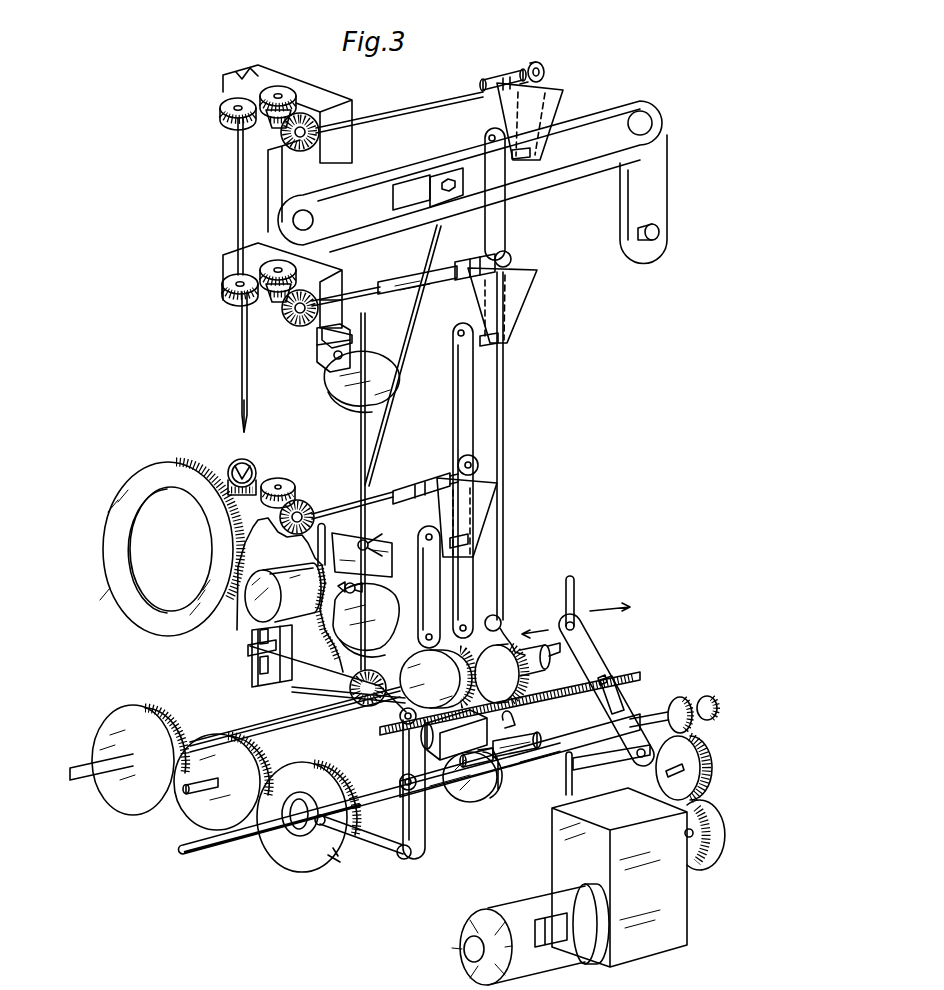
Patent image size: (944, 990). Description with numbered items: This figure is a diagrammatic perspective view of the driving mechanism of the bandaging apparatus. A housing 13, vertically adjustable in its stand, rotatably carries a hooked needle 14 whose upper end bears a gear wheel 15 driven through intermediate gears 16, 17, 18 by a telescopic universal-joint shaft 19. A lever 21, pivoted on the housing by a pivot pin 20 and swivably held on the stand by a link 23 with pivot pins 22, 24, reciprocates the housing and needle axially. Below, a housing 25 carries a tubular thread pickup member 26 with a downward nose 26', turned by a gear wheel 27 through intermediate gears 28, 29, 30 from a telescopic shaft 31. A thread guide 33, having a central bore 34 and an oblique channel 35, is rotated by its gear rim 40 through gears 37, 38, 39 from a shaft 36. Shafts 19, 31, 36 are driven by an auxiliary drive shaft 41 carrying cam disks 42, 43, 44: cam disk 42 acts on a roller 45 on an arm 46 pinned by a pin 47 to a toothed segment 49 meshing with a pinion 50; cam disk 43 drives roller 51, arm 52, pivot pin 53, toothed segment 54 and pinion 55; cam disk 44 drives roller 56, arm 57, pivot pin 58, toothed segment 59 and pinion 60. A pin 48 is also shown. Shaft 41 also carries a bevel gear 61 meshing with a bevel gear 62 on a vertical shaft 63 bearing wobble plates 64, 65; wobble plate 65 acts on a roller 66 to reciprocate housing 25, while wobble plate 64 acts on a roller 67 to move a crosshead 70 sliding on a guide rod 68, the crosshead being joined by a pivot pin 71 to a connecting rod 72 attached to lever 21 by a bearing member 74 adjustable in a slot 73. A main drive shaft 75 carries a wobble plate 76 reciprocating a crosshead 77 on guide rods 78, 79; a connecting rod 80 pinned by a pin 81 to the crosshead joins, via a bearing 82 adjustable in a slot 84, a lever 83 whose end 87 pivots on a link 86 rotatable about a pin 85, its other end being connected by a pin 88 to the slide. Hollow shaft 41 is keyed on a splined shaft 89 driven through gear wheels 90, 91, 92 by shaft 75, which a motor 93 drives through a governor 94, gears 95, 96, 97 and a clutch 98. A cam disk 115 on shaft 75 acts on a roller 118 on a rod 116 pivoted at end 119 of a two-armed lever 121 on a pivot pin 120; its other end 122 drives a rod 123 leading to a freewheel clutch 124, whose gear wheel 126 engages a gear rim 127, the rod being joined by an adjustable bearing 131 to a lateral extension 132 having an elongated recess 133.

The housing 13 is at (247, 74).
The hooked needle 14 is at (236, 153).
The gear wheel 15 is at (224, 104).
The intermediate gear 16 is at (285, 92).
The intermediate gear 17 is at (270, 130).
The intermediate gear 18 is at (314, 118).
The universal-joint shaft 19 is at (426, 100).
The pivot pin 20 is at (316, 222).
The lever 21 is at (352, 188).
The pivot pin 22 is at (660, 236).
The link 23 is at (660, 191).
The pivot pin 24 is at (653, 121).
The housing 25 is at (338, 293).
The tubular thread pickup member 26 is at (221, 362).
The nose 26' is at (215, 410).
The gear wheel 27 is at (222, 290).
The intermediate gear 28 is at (286, 271).
The intermediate gear 29 is at (280, 306).
The intermediate gear 30 is at (292, 328).
The universal-joint shaft 31 is at (398, 273).
The thread guide 33 is at (229, 478).
The central bore 34 is at (246, 464).
The channel 35 is at (240, 462).
The universal-joint shaft 36 is at (397, 477).
The intermediate gear 37 is at (308, 505).
The intermediate gear 38 is at (283, 513).
The intermediate gear 39 is at (278, 478).
The gear rim 40 is at (223, 502).
The auxiliary drive shaft 41 is at (522, 662).
The cam disk 42 is at (410, 666).
The cam disk 43 is at (468, 674).
The cam disk 44 is at (500, 673).
The roller 45 is at (418, 636).
The arm 46 is at (427, 574).
The pin 47 is at (425, 528).
The pin 48 is at (482, 540).
The toothed segment 49 is at (482, 505).
The pinion 50 is at (480, 468).
The roller 51 is at (493, 622).
The arm 52 is at (465, 438).
The pivot pin 53 is at (462, 323).
The toothed segment 54 is at (517, 290).
The pinion 55 is at (511, 256).
The roller 56 is at (507, 628).
The arm 57 is at (497, 410).
The pivot pin 58 is at (485, 137).
The toothed segment 59 is at (562, 102).
The pinion 60 is at (545, 69).
The bevel gear 61 is at (364, 708).
The bevel gear 62 is at (336, 665).
The vertical shaft 63 is at (360, 450).
The wobble plate 64 is at (384, 628).
The wobble plate 65 is at (334, 407).
The roller 66 is at (328, 365).
The roller 67 is at (350, 594).
The guide rod 68 is at (337, 534).
The crosshead 70 is at (392, 556).
The pivot pin 71 is at (368, 540).
The connecting rod 72 is at (407, 335).
The slot 73 is at (400, 185).
The bearing member 74 is at (443, 207).
The main drive shaft 75 is at (200, 852).
The wobble plate 76 is at (470, 800).
The crosshead 77 is at (510, 772).
The guide rod 78 is at (500, 714).
The guide rod 79 is at (540, 755).
The connecting rod 80 is at (570, 706).
The pin 81 is at (515, 722).
The bearing 82 is at (620, 698).
The lever 83 is at (590, 653).
The slot 84 is at (606, 678).
The pin 85 is at (573, 793).
The link 86 is at (613, 770).
The end of lever 87 is at (642, 760).
The pin 88 is at (575, 597).
The splined shaft 89 is at (322, 716).
The gear wheel 90 is at (276, 860).
The gear wheel 91 is at (183, 818).
The gear wheel 92 is at (115, 803).
The motor 93 is at (480, 920).
The governor 94 is at (558, 860).
The intermediate gear 95 is at (687, 853).
The intermediate gear 96 is at (678, 795).
The intermediate gear 97 is at (673, 697).
The clutch 98 is at (707, 697).
The cam disk 115 is at (296, 836).
The rod 116 is at (377, 838).
The roller 118 is at (333, 860).
The end of lever 119 is at (403, 859).
The pivot pin 120 is at (428, 790).
The two-armed lever 121 is at (402, 763).
The end of lever 122 is at (402, 719).
The rod 123 is at (343, 673).
The freewheel clutch 124 is at (282, 570).
The gear wheel 126 is at (243, 625).
The gear rim 127 is at (137, 617).
The adjustable bearing 131 is at (250, 652).
The lateral extension 132 is at (253, 670).
The elongated recess 133 is at (265, 675).